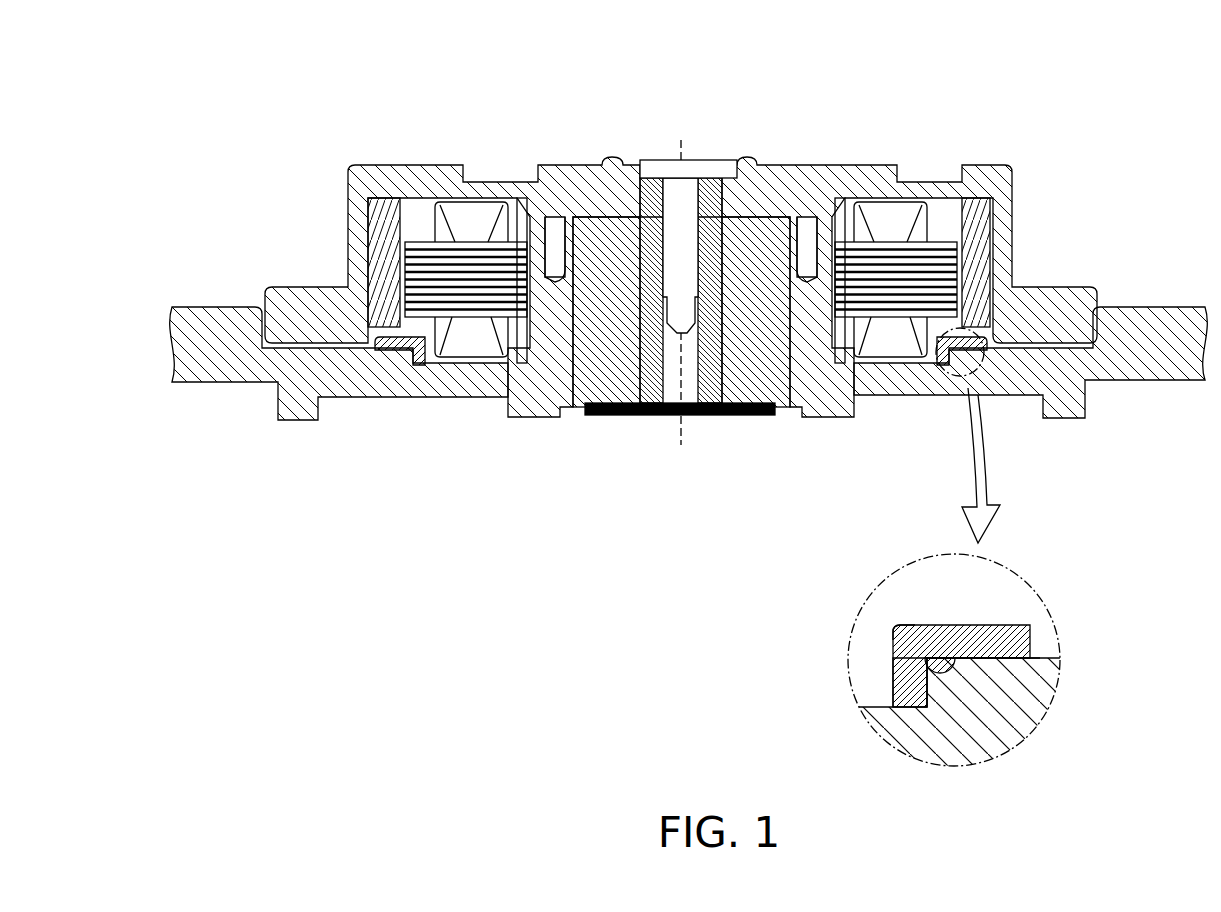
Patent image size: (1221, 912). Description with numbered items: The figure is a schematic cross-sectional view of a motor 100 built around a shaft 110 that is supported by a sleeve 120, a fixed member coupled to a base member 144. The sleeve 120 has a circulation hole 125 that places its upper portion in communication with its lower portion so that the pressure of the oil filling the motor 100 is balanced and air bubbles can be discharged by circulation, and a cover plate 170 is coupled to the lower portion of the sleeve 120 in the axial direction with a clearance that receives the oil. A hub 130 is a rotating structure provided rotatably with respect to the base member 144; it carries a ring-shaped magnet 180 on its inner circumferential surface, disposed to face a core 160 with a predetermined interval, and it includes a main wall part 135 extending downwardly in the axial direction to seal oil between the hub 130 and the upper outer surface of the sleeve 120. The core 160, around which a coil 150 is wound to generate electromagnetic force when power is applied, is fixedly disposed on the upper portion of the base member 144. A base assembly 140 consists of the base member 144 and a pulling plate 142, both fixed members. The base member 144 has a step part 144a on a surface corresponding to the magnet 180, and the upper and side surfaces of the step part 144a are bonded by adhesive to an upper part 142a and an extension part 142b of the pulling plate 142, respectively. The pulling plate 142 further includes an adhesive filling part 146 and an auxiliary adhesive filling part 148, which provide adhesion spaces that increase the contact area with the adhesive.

The motor 100 is at (689, 397).
The shaft 110 is at (680, 413).
The sleeve 120 is at (628, 386).
The circulation hole 125 is at (768, 162).
The hub 130 is at (885, 177).
The main wall part 135 is at (803, 240).
The base assembly 140 is at (689, 543).
The pulling plate 142 is at (395, 350).
The upper part 142a is at (1005, 625).
The extension part 142b is at (893, 652).
The base member 144 is at (415, 392).
The step part 144a is at (967, 657).
The adhesive filling part 146 is at (903, 677).
The auxiliary adhesive filling part 148 is at (907, 627).
The coil 150 is at (472, 345).
The core 160 is at (507, 318).
The cover plate 170 is at (733, 400).
The ring-shaped magnet 180 is at (1012, 265).